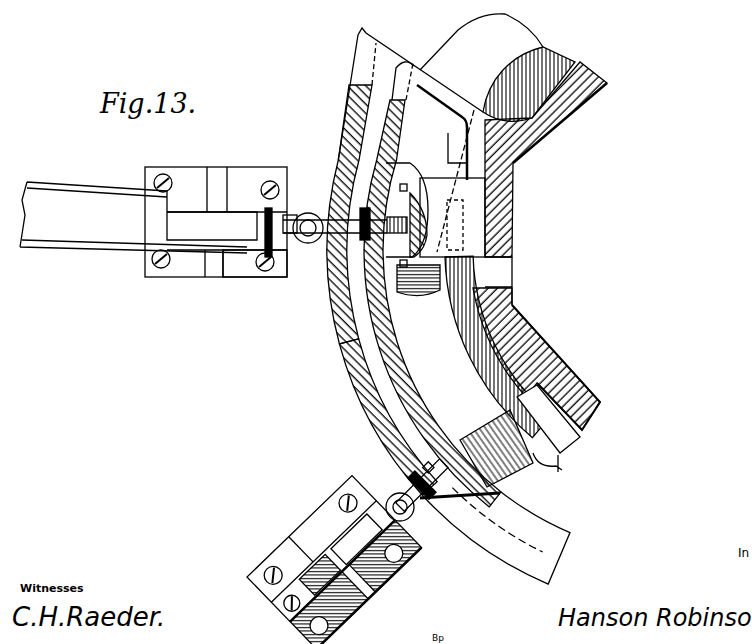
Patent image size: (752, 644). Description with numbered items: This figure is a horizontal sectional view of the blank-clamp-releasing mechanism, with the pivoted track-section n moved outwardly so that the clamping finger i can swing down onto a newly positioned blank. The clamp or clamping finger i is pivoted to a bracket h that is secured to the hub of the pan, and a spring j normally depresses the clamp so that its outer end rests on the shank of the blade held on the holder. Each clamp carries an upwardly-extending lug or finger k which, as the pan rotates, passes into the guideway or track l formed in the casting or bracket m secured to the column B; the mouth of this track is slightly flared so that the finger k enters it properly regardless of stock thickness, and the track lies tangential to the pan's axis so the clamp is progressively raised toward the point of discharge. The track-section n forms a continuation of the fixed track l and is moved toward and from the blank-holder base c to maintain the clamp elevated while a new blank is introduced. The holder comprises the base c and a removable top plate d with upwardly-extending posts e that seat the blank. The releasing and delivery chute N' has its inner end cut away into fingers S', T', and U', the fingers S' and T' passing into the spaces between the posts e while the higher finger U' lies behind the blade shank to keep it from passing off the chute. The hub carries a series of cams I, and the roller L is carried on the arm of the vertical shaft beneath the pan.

The bowl or roller L is at (433, 292).
The guideway or track l is at (367, 120).
The track-section n is at (358, 338).
The lug or finger k is at (332, 263).
The casting or bracket m is at (445, 168).
The column B is at (513, 247).
The bracket h is at (420, 280).
The clamp or clamping finger i is at (295, 221).
The spring j is at (320, 238).
The finger U' is at (296, 198).
The releasing and delivery chute N' is at (133, 217).
The finger S' is at (216, 222).
The finger T' is at (251, 216).
The removable top plate d is at (178, 207).
The base c is at (238, 267).
The fingers or posts e is at (355, 582).
The cams I is at (480, 432).
The tooth T is at (548, 444).